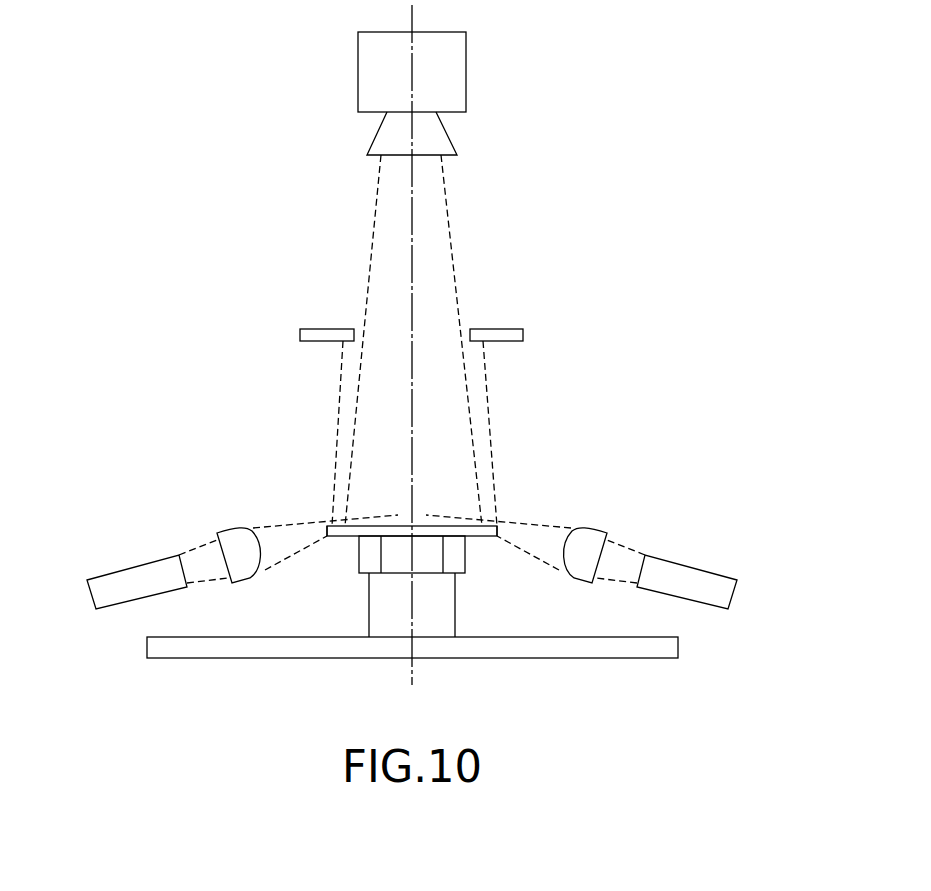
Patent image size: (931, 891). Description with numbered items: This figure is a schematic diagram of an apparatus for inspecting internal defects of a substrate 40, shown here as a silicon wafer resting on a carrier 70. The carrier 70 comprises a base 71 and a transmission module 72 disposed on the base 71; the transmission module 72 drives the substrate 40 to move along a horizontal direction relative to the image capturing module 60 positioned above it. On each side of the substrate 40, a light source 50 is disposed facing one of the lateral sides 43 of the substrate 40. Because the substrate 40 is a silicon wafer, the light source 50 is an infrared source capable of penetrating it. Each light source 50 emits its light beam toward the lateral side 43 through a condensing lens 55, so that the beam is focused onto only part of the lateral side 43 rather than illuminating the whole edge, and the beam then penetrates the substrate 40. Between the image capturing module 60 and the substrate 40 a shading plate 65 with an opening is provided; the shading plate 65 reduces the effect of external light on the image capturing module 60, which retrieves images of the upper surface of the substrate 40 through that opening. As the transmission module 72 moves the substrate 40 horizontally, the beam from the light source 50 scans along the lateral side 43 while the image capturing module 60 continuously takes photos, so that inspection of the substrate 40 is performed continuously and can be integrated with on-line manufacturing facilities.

The substrate 40 is at (437, 530).
The lateral side 43 is at (326, 527).
The light source 50 is at (123, 573).
The condensing lens 55 is at (232, 535).
The image capturing module 60 is at (460, 70).
The shading plate 65 is at (495, 333).
The carrier 70 is at (352, 586).
The base 71 is at (377, 607).
The transmission module 72 is at (367, 553).